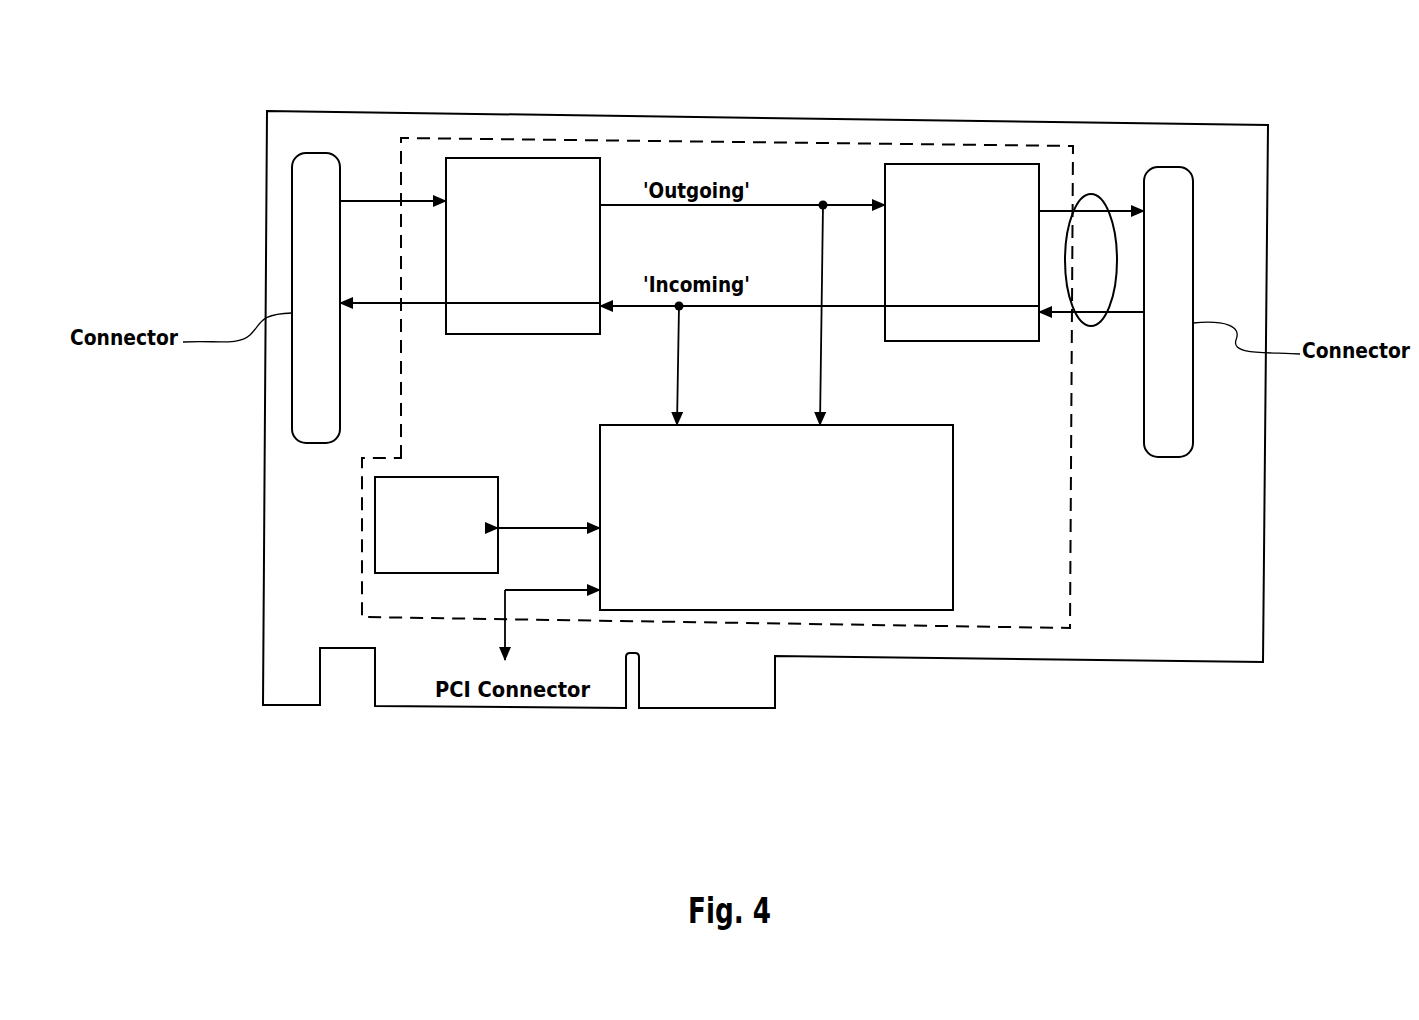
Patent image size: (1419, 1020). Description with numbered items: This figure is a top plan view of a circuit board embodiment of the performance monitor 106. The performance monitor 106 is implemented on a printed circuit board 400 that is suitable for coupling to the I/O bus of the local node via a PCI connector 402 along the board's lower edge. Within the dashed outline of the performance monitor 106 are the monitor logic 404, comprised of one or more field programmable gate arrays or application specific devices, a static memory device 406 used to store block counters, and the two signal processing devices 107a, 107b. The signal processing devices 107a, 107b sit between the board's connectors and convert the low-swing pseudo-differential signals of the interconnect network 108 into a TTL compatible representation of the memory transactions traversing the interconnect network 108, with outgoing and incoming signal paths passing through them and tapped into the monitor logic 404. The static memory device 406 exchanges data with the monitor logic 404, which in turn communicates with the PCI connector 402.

The printed circuit board 400 is at (1243, 650).
The PCI connector 402 is at (775, 670).
The monitor logic 404 is at (652, 602).
The static memory device 406 is at (419, 565).
The performance monitor 106 is at (1070, 572).
The signal processing device 107a is at (505, 325).
The signal processing device 107b is at (943, 333).
The interconnect network 108 is at (1091, 196).